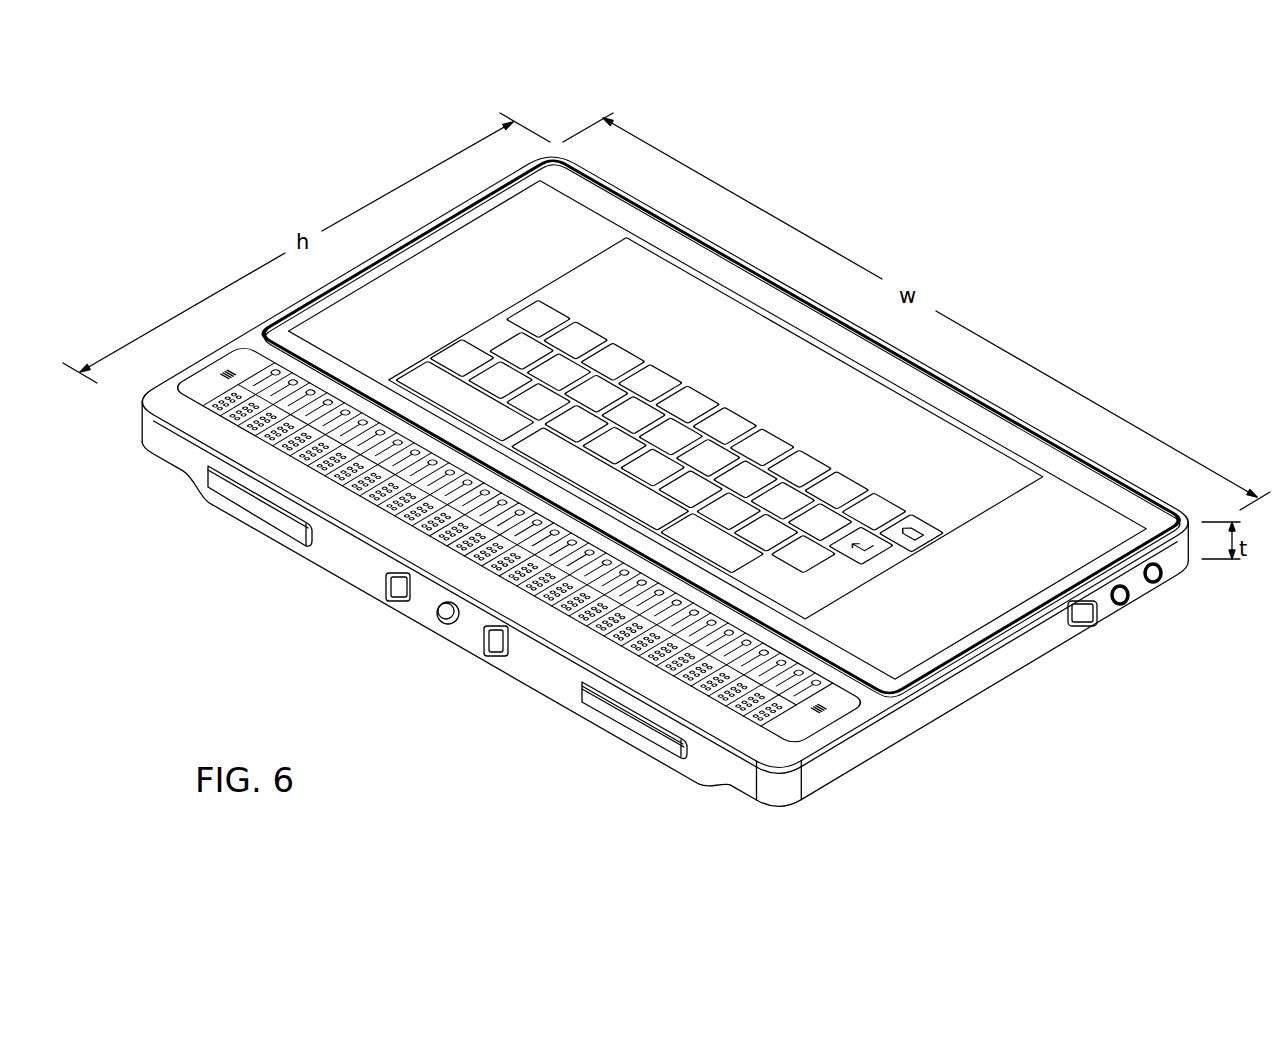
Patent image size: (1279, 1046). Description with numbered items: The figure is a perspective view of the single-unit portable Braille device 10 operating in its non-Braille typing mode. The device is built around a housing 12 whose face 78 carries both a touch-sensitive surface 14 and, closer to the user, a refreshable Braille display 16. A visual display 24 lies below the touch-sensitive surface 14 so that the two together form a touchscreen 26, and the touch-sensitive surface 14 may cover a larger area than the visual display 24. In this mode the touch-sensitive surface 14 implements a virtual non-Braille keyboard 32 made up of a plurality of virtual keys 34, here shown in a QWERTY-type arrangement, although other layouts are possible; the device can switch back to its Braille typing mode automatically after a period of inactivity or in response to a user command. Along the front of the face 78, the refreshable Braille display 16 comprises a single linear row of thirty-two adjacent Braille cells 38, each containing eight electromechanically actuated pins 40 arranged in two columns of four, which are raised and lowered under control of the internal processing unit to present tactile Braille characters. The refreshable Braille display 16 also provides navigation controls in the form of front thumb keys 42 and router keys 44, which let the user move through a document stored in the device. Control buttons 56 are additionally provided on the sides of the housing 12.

The portable Braille device 10 is at (1084, 146).
The housing 12 is at (940, 694).
The touch-sensitive surface 14 is at (997, 580).
The refreshable Braille display 16 is at (547, 622).
The visual display 24 is at (917, 445).
The touchscreen 26 is at (1135, 531).
The virtual non-Braille keyboard 32 is at (680, 334).
The virtual keys 34 is at (590, 423).
The Braille cells 38 is at (372, 498).
The pins 40 is at (664, 634).
The front thumb keys 42 is at (222, 488).
The router keys 44 is at (262, 356).
The control buttons 56 is at (484, 650).
The face 78 is at (890, 707).